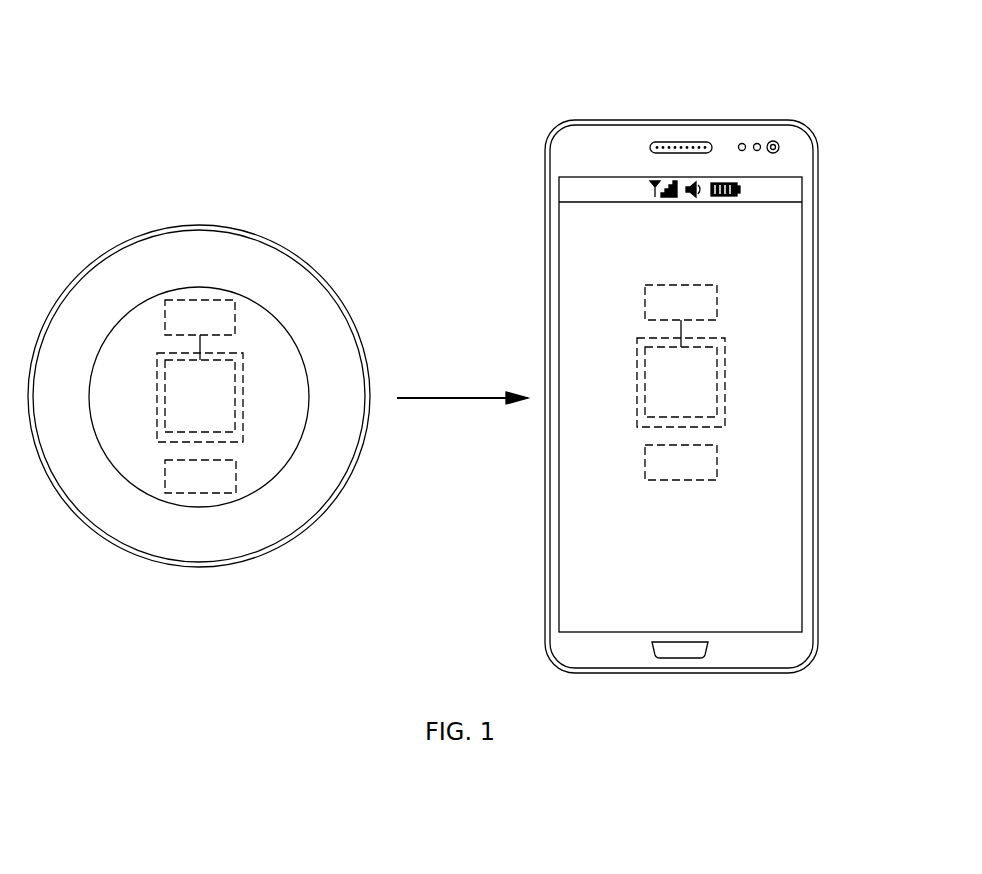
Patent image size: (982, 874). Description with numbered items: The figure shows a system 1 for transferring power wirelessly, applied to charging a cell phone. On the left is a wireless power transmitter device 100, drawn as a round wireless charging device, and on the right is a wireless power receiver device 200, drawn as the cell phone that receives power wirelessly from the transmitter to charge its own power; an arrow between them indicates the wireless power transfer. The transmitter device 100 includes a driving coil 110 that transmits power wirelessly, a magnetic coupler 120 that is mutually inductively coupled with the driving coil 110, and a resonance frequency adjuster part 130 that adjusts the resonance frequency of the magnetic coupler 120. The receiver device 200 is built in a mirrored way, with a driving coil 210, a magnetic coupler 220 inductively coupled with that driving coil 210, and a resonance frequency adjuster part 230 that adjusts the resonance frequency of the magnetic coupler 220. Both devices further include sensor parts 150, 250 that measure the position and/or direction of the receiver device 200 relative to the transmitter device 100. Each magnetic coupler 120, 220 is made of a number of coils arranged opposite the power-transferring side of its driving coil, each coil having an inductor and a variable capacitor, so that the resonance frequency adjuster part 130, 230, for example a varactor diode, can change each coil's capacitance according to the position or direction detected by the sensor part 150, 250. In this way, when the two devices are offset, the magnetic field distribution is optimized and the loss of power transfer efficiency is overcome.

The system for transferring power wirelessly 1 is at (596, 20).
The wireless power transmitter device 100 is at (133, 237).
The driving coil 110 is at (220, 442).
The magnetic coupler 120 is at (187, 432).
The resonance frequency adjuster part 130 is at (198, 300).
The sensor part 150 is at (165, 476).
The wireless power receiver device 200 is at (705, 120).
The driving coil 210 is at (725, 358).
The magnetic coupler 220 is at (717, 398).
The resonance frequency adjuster part 230 is at (717, 302).
The sensor part 250 is at (717, 462).